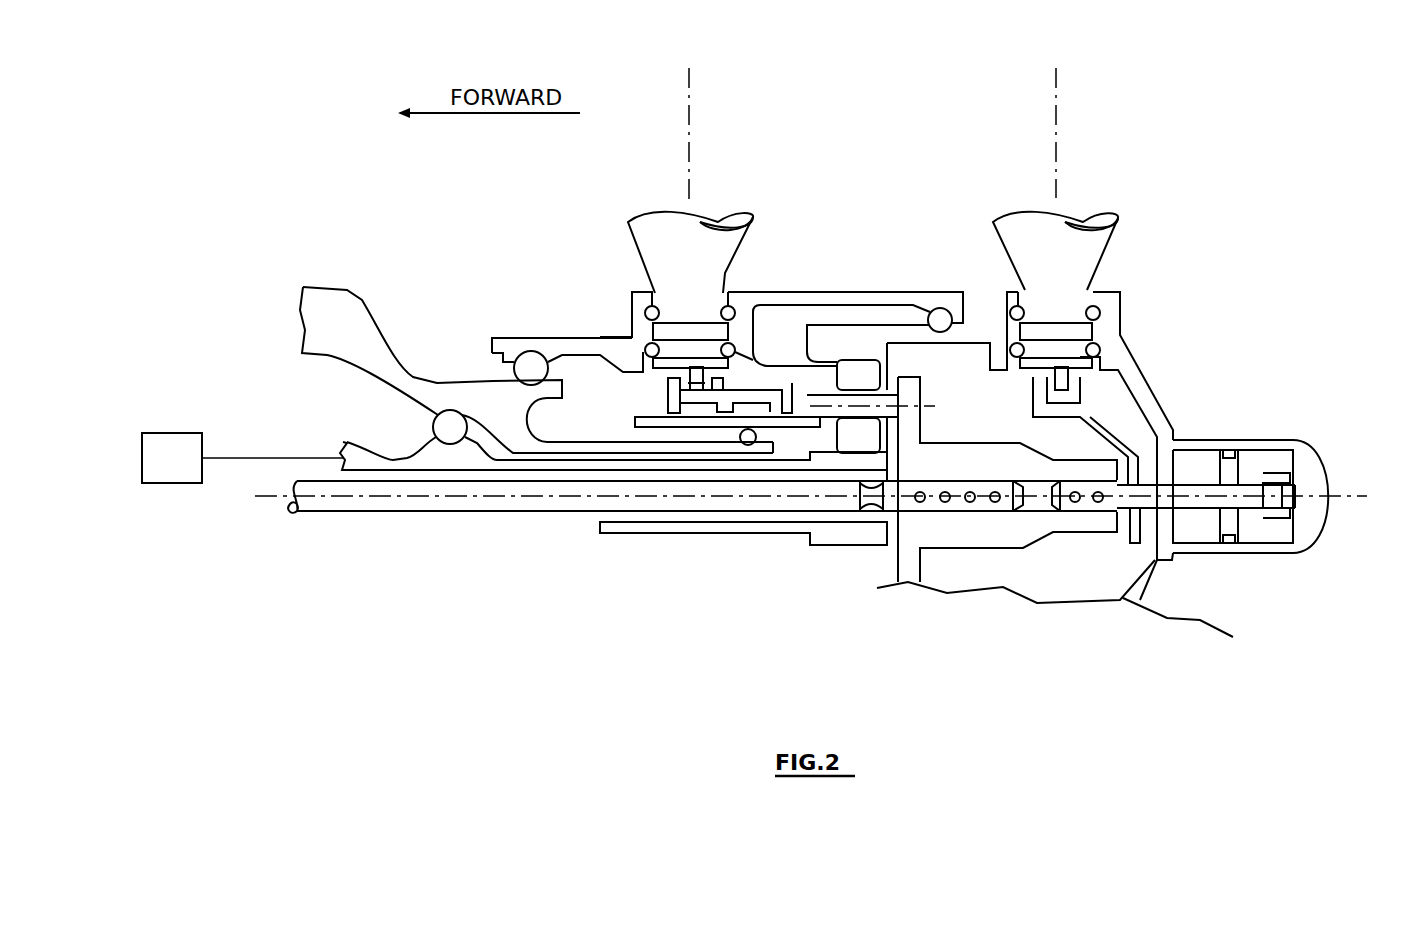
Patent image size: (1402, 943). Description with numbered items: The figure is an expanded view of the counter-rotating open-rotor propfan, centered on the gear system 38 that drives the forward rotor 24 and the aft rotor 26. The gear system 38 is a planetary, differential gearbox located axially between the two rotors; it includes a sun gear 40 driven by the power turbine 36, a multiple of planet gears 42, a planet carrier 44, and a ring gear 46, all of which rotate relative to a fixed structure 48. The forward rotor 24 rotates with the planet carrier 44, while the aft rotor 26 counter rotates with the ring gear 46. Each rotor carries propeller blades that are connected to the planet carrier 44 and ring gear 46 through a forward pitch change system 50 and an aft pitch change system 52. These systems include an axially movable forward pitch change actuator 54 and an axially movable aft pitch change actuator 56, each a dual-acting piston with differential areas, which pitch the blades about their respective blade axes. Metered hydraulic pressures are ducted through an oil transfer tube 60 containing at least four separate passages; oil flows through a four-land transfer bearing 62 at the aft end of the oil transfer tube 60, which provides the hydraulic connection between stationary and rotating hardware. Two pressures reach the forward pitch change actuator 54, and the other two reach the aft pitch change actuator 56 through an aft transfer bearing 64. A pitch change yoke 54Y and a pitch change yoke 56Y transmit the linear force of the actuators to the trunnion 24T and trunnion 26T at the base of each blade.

The forward rotor 24 is at (669, 206).
The trunnion 24T is at (695, 385).
The aft rotor 26 is at (1035, 207).
The trunnion 26T is at (1062, 375).
The power turbine 36 is at (242, 458).
The gear system 38 is at (738, 628).
The sun gear 40 is at (843, 548).
The planet gears 42 is at (800, 440).
The planet carrier 44 is at (890, 300).
The ring gear 46 is at (885, 360).
The fixed structure 48 is at (362, 300).
The forward pitch change system 50 is at (612, 392).
The aft pitch change system 52 is at (1134, 433).
The forward pitch change actuator 54 is at (667, 395).
The pitch change yoke 54Y is at (723, 388).
The aft pitch change actuator 56 is at (1238, 470).
The pitch change yoke 56Y is at (1083, 395).
The oil transfer tube 60 is at (345, 513).
The transfer bearing 62 is at (986, 480).
The aft transfer bearing 64 is at (1093, 525).